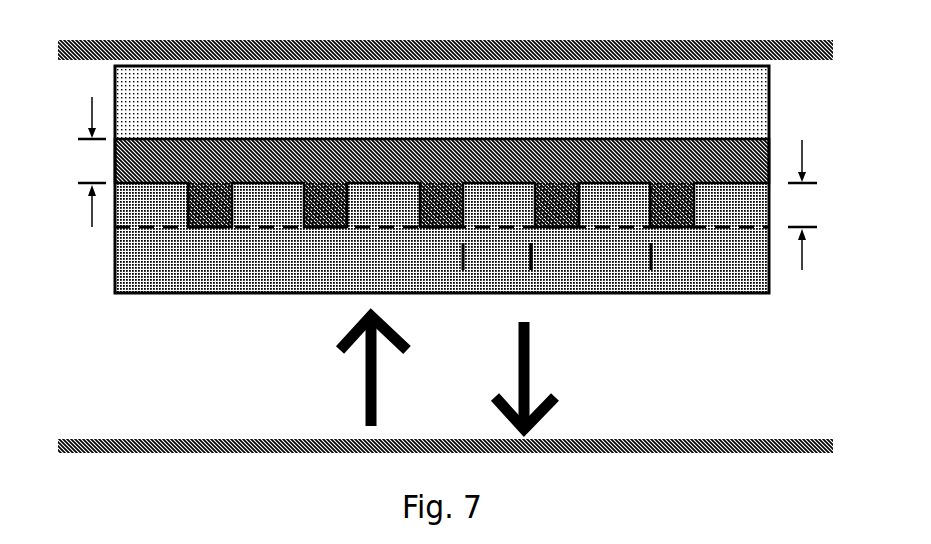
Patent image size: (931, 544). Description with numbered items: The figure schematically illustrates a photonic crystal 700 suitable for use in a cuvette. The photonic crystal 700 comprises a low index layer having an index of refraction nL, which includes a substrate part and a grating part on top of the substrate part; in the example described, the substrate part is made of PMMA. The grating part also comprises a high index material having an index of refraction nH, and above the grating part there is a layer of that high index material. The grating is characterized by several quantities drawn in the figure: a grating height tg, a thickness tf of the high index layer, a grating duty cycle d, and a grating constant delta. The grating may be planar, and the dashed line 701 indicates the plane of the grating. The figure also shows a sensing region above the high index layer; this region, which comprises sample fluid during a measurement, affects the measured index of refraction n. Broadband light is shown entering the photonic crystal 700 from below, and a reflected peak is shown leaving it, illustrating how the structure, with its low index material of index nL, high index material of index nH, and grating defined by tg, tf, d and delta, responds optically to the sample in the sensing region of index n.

The photonic crystal 700 is at (435, 226).
The dashed line 701 is at (727, 228).
The index of refraction n is at (442, 102).
The index of refraction of high index material nH is at (442, 183).
The index of refraction of low index layer nL is at (442, 238).
The grating duty cycle d is at (497, 257).
The grating constant delta is at (591, 257).
The thickness of the high index layer tf is at (92, 162).
The grating height tg is at (802, 205).